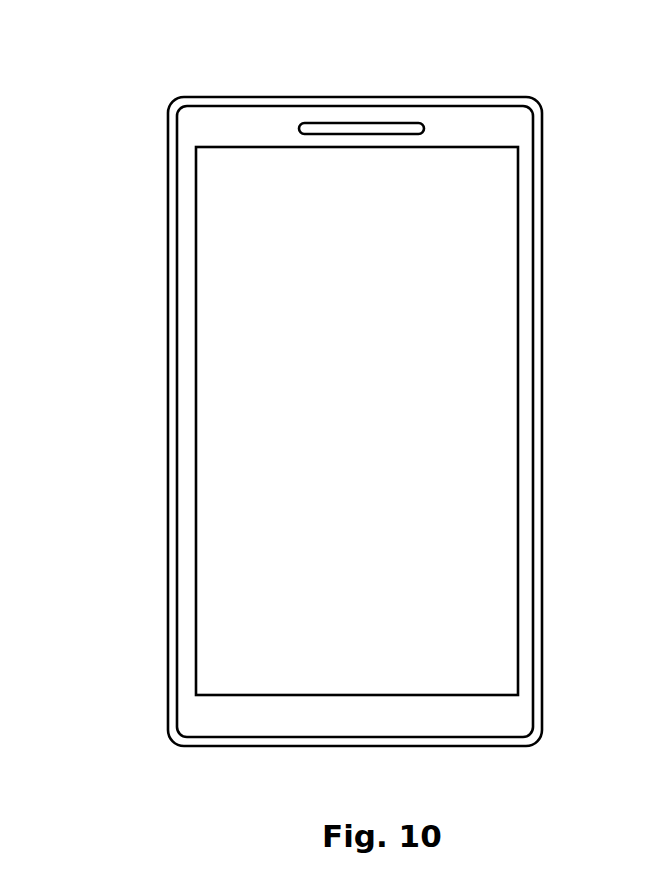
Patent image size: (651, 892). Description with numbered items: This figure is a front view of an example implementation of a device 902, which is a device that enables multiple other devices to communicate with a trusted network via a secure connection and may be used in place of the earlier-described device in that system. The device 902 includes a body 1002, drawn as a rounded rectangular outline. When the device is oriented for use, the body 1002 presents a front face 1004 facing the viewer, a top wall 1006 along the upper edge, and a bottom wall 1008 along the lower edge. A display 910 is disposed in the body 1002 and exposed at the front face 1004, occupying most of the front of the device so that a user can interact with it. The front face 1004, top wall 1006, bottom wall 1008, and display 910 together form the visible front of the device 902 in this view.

The device 902 is at (126, 89).
The body 1002 is at (543, 162).
The front face 1004 is at (518, 373).
The top wall 1006 is at (348, 98).
The bottom wall 1008 is at (352, 747).
The display 910 is at (363, 410).